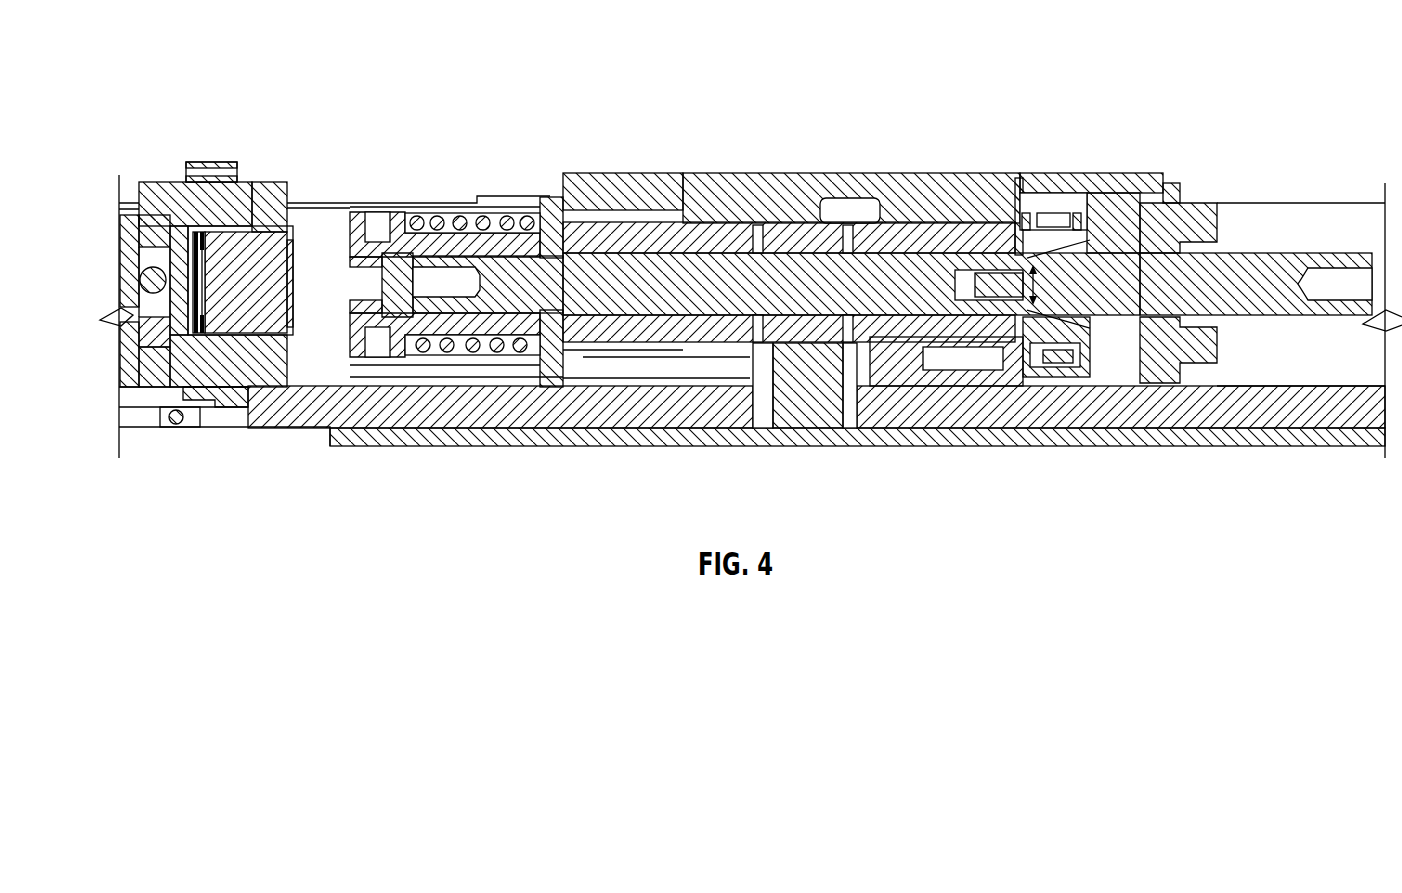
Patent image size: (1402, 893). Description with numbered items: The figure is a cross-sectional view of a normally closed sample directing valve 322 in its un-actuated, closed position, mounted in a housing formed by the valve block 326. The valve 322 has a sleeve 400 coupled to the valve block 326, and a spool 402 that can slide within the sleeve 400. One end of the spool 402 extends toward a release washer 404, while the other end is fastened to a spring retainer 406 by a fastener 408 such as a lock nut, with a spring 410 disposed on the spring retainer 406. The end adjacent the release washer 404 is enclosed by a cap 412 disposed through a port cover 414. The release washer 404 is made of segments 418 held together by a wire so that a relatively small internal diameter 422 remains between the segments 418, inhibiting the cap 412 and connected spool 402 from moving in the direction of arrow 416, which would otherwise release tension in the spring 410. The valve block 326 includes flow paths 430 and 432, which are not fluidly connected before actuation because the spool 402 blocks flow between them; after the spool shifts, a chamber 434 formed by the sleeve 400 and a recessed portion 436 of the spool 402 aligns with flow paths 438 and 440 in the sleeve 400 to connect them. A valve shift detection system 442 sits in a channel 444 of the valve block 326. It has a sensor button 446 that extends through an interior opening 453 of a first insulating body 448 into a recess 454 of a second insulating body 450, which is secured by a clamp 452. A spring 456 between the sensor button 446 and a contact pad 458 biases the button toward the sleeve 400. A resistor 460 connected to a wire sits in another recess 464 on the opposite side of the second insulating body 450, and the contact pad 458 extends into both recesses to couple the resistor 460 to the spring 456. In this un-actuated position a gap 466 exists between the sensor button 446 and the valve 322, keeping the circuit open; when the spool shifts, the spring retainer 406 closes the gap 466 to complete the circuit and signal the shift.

The valve shift detection system 442 is at (176, 88).
The second insulating body 450 is at (172, 197).
The clamp 452 is at (213, 163).
The recess 454 is at (208, 240).
The first insulating body 448 is at (275, 185).
The channel 444 is at (300, 232).
The interior opening 453 is at (325, 207).
The spring 410 is at (443, 215).
The sleeve 400 is at (625, 225).
The spool 402 is at (707, 278).
The recessed portion 436 is at (848, 240).
The chamber 434 is at (875, 242).
The valve block 326 is at (950, 190).
The release washer 404 is at (1043, 200).
The sample directing valve 322 is at (1046, 110).
The segments 418 is at (1085, 215).
The port cover 414 is at (1197, 218).
The internal diameter 422 is at (1040, 286).
The resistor 460 is at (150, 287).
The contact pad 458 is at (213, 272).
The recess 464 is at (178, 418).
The spring 456 is at (155, 340).
The sensor button 446 is at (307, 320).
The gap 466 is at (258, 315).
The fastener 408 is at (393, 305).
The spring retainer 406 is at (467, 322).
The flow path 438 is at (745, 385).
The flow path 432 is at (760, 430).
The flow path 430 is at (852, 430).
The flow path 440 is at (868, 283).
The arrow 416 is at (950, 368).
The cap 412 is at (1143, 305).